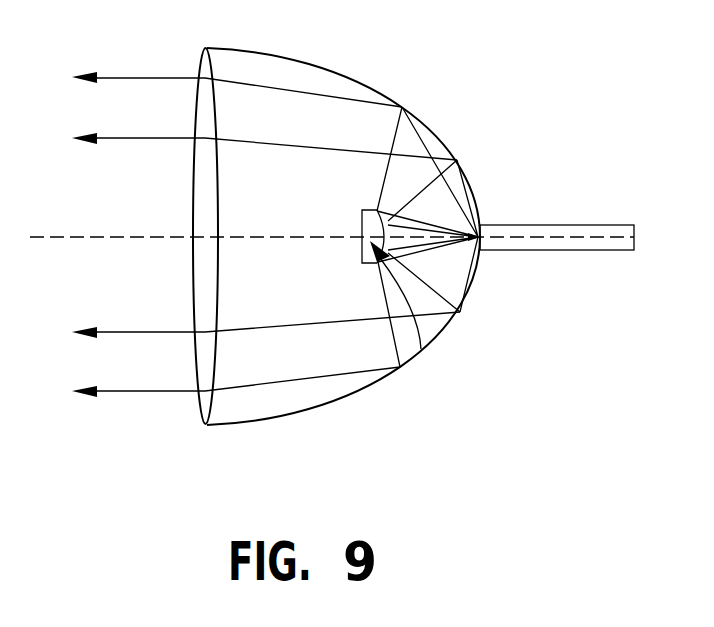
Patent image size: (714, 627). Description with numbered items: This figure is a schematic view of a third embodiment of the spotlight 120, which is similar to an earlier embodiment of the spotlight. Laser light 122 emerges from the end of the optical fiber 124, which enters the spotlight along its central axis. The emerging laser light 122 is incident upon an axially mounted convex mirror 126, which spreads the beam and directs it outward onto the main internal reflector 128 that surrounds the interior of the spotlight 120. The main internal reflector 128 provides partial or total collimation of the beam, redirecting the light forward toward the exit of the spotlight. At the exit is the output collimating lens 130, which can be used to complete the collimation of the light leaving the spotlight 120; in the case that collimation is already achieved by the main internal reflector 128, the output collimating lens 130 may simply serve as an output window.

The spotlight 120 is at (442, 48).
The laser light 122 is at (442, 245).
The optical fiber 124 is at (562, 205).
The convex mirror 126 is at (421, 349).
The main internal reflector 128 is at (378, 405).
The output collimating lens 130 is at (184, 415).